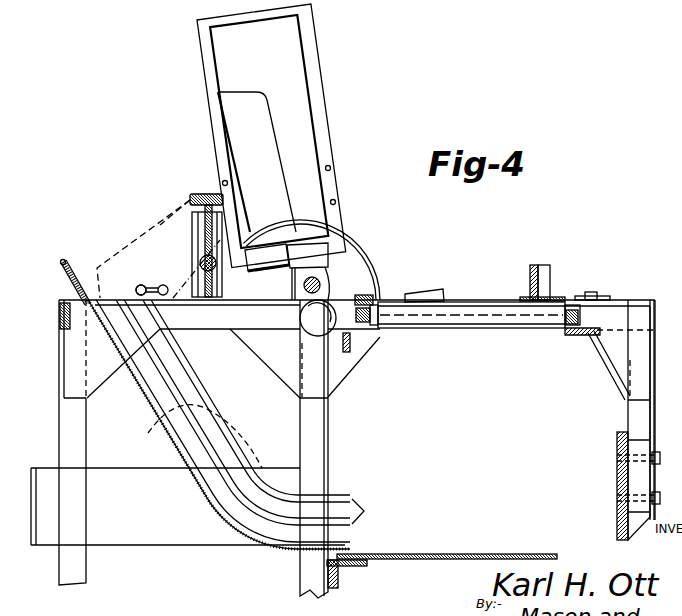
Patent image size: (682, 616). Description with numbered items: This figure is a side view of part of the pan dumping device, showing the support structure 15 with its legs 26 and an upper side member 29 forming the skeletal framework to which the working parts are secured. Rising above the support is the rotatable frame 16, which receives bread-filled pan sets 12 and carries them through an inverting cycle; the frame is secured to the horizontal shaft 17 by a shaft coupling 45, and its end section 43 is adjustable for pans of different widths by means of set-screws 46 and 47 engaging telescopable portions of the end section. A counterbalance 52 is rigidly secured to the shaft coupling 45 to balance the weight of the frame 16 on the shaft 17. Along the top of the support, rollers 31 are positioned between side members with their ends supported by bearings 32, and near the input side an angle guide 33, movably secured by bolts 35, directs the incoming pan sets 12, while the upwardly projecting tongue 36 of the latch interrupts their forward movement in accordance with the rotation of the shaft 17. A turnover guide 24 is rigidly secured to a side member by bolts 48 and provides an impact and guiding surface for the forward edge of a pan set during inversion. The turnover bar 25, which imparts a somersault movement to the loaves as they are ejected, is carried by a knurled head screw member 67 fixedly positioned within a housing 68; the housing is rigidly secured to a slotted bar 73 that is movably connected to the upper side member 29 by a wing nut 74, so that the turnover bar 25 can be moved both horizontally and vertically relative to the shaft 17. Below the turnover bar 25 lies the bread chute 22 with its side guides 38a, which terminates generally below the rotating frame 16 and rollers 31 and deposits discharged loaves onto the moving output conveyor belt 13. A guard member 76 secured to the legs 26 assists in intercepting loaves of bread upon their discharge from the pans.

The pan set 12 is at (267, 103).
The output conveyor belt 13 is at (430, 554).
The support structure 15 is at (657, 361).
The frame 16 is at (327, 88).
The shaft 17 is at (302, 289).
The chute 22 is at (136, 421).
The turnover guide 24 is at (357, 243).
The turnover bar 25 is at (200, 263).
The legs 26 is at (59, 410).
The upper side member 29 is at (193, 324).
The rollers 31 is at (483, 303).
The bearings 32 is at (360, 334).
The angle guide 33 is at (550, 270).
The bolts 35 is at (592, 292).
The tongue 36 is at (436, 290).
The side guides 38a is at (373, 511).
The end section 43 is at (200, 49).
The shaft coupling 45 is at (316, 264).
The set-screw 46 is at (222, 183).
The set-screw 47 is at (336, 202).
The bolts 48 is at (362, 296).
The counterbalance 52 is at (305, 331).
The knurled head screw member 67 is at (205, 228).
The housing 68 is at (198, 246).
The slotted bar 73 is at (168, 290).
The wing nut 74 is at (139, 288).
The guard member 76 is at (62, 259).